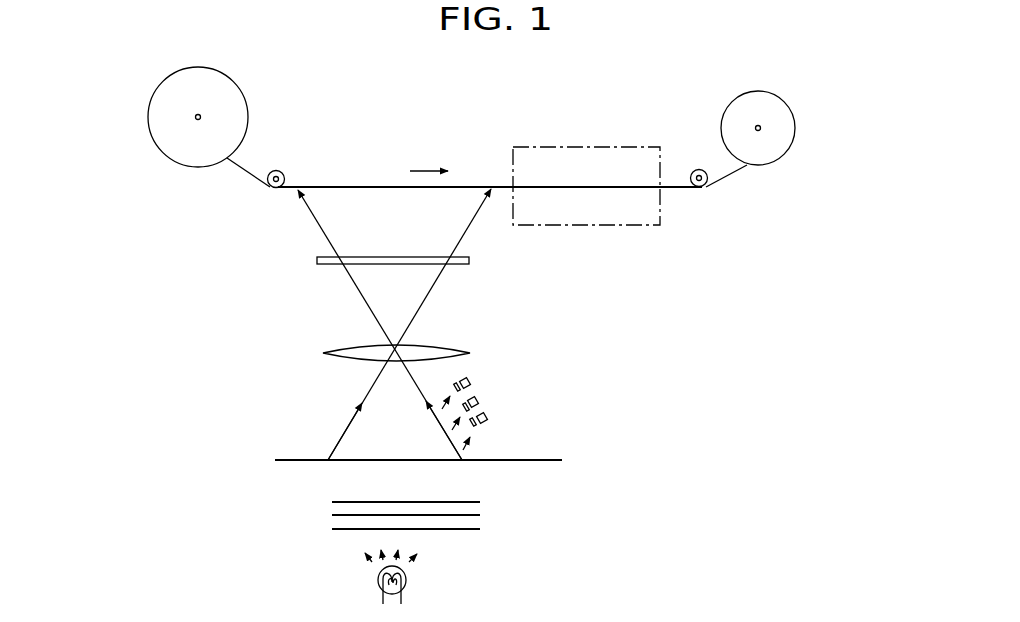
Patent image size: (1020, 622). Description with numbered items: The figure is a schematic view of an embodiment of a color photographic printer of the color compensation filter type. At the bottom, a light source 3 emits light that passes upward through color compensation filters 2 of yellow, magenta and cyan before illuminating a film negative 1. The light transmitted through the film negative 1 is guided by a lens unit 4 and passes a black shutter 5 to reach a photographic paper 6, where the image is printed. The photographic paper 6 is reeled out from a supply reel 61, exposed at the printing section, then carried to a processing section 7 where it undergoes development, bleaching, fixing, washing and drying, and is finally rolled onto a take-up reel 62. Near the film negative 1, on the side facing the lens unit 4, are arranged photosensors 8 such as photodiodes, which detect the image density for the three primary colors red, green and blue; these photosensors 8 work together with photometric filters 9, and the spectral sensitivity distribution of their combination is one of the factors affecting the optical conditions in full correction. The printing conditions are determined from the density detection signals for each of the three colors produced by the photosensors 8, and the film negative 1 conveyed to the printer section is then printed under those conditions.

The film negative 1 is at (290, 462).
The color compensation filters 2 is at (525, 490).
The light source 3 is at (406, 581).
The lens unit 4 is at (450, 346).
The black shutter 5 is at (470, 260).
The photographic paper 6 is at (345, 187).
The processing section 7 is at (575, 147).
The photosensors 8 is at (492, 360).
The photometric filters 9 is at (477, 431).
The supply reel 61 is at (245, 97).
The take-up reel 62 is at (755, 91).